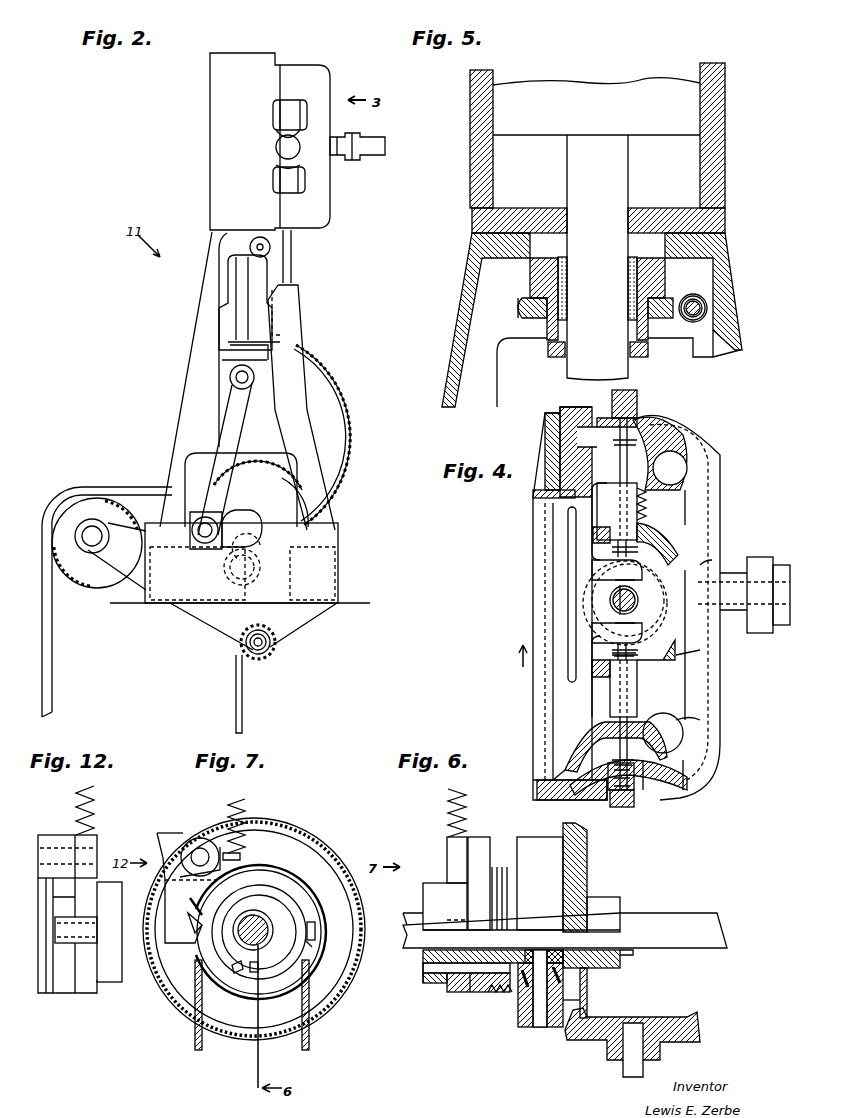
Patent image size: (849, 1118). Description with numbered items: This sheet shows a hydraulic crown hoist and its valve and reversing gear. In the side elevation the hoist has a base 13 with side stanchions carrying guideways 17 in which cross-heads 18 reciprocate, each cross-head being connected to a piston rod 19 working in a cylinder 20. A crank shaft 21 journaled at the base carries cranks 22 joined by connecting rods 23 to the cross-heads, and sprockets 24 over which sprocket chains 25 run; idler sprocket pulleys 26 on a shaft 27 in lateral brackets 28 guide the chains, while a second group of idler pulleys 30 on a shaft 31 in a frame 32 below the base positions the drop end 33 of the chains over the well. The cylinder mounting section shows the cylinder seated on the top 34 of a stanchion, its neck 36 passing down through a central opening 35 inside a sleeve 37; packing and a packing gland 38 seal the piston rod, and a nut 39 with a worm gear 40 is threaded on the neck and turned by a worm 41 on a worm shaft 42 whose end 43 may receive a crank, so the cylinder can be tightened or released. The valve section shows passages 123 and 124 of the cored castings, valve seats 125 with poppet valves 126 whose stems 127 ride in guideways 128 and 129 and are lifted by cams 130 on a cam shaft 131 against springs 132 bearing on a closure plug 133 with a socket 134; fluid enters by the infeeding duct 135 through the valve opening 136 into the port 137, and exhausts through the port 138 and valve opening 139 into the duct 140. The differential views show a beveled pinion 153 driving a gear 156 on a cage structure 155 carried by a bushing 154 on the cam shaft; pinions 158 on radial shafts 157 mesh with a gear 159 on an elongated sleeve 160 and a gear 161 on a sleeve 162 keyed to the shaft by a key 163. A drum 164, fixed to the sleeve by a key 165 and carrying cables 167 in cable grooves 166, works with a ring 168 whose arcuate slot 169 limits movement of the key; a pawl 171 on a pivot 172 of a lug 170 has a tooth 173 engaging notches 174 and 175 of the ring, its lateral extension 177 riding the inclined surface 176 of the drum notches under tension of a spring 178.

In FIG. 2, the base 13 is at (340, 583).
In FIG. 2, the guideways 17 is at (218, 342).
In FIG. 2, the cross-heads 18 is at (232, 380).
In FIG. 2, the piston rod 19 is at (247, 282).
In FIG. 5, the piston rod 19 is at (628, 368).
In FIG. 2, the cylinders 20 is at (217, 165).
In FIG. 5, the cylinders 20 is at (722, 142).
In FIG. 2, the crank shaft 21 is at (253, 533).
In FIG. 2, the cranks 22 is at (230, 543).
In FIG. 2, the connecting rods 23 is at (227, 440).
In FIG. 2, the sprockets 24 is at (230, 512).
In FIG. 2, the sprocket chains 25 is at (147, 487).
In FIG. 2, the idler sprocket pulleys 26 is at (78, 510).
In FIG. 2, the shaft 27 is at (90, 535).
In FIG. 2, the lateral brackets 28 is at (128, 568).
In FIG. 2, the idler pulleys 30 is at (258, 662).
In FIG. 2, the shaft 31 is at (270, 647).
In FIG. 2, the frame 32 is at (300, 620).
In FIG. 2, the drop end 33 is at (237, 703).
In FIG. 5, the top 34 is at (722, 247).
In FIG. 5, the central opening 35 is at (640, 270).
In FIG. 5, the neck 36 is at (655, 290).
In FIG. 5, the sleeve 37 is at (535, 265).
In FIG. 5, the packing gland 38 is at (555, 358).
In FIG. 5, the nut 39 is at (532, 320).
In FIG. 5, the worm gear 40 is at (518, 308).
In FIG. 5, the worm 41 is at (700, 305).
In FIG. 5, the worm shaft 42 is at (703, 312).
In FIG. 2, the end 43 is at (272, 247).
In FIG. 4, the passages 123 is at (688, 440).
In FIG. 4, the passage 124 is at (712, 470).
In FIG. 4, the valve seats 125 is at (655, 790).
In FIG. 4, the poppet valves 126 is at (628, 800).
In FIG. 4, the stems 127 is at (628, 653).
In FIG. 2, the guideway 128 is at (292, 183).
In FIG. 4, the guideway 128 is at (625, 533).
In FIG. 4, the guideway 129 is at (627, 568).
In FIG. 4, the cams 130 is at (614, 602).
In FIG. 4, the cam shaft 131 is at (639, 601).
In FIG. 6, the cam shaft 131 is at (650, 920).
In FIG. 4, the springs 132 is at (618, 400).
In FIG. 4, the closure plug 133 is at (637, 405).
In FIG. 4, the socket 134 is at (638, 440).
In FIG. 4, the infeeding duct 135 is at (677, 770).
In FIG. 4, the valve opening 136 is at (690, 722).
In FIG. 4, the port 137 is at (583, 750).
In FIG. 4, the port 138 is at (565, 497).
In FIG. 4, the valve opening 139 is at (690, 430).
In FIG. 4, the duct 140 is at (678, 465).
In FIG. 2, the beveled pinion 153 is at (300, 170).
In FIG. 4, the beveled pinion 153 is at (660, 668).
In FIG. 6, the beveled pinion 153 is at (690, 1022).
In FIG. 6, the bushing 154 is at (427, 955).
In FIG. 6, the cage structure 155 is at (518, 1025).
In FIG. 2, the gear 156 is at (305, 125).
In FIG. 4, the gear 156 is at (672, 657).
In FIG. 6, the gear 156 is at (563, 1020).
In FIG. 6, the radial shafts 157 is at (540, 1027).
In FIG. 6, the pinions 158 is at (525, 995).
In FIG. 6, the gear 159 is at (497, 992).
In FIG. 6, the elongated sleeve 160 is at (427, 968).
In FIG. 6, the gear 161 is at (630, 970).
In FIG. 6, the sleeve 162 is at (620, 965).
In FIG. 6, the key 163 is at (633, 952).
In FIG. 6, the drum 164 is at (480, 998).
In FIG. 7, the key 165 is at (255, 945).
In FIG. 6, the key 165 is at (455, 980).
In FIG. 6, the cable grooves 166 is at (500, 870).
In FIG. 7, the cables 167 is at (197, 1045).
In FIG. 6, the ring 168 is at (425, 985).
In FIG. 7, the arcuate slot 169 is at (237, 970).
In FIG. 4, the lug 170 is at (670, 585).
In FIG. 7, the lug 170 is at (172, 840).
In FIG. 6, the lug 170 is at (482, 840).
In FIG. 4, the pawl 171 is at (665, 610).
In FIG. 12, the pawl 171 is at (92, 880).
In FIG. 7, the pawl 171 is at (170, 930).
In FIG. 6, the pawl 171 is at (447, 850).
In FIG. 7, the pivot 172 is at (200, 848).
In FIG. 12, the tooth 173 is at (87, 945).
In FIG. 7, the tooth 173 is at (188, 930).
In FIG. 7, the notch 174 is at (312, 925).
In FIG. 6, the notch 174 is at (457, 922).
In FIG. 7, the notch 175 is at (195, 942).
In FIG. 12, the inclined surface 176 is at (63, 905).
In FIG. 7, the inclined surface 176 is at (310, 943).
In FIG. 12, the lateral extension 177 is at (57, 947).
In FIG. 4, the spring 178 is at (642, 503).
In FIG. 12, the spring 178 is at (94, 806).
In FIG. 7, the spring 178 is at (248, 802).
In FIG. 6, the spring 178 is at (447, 802).